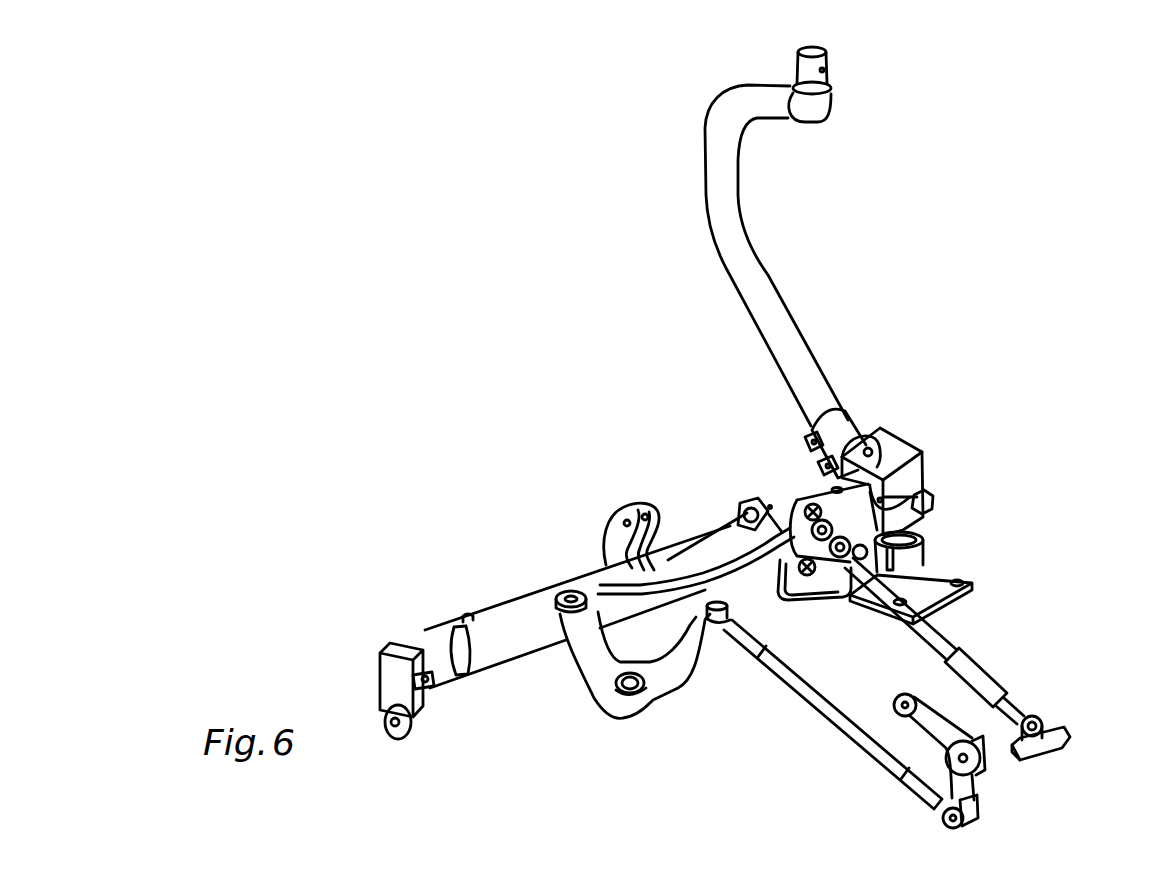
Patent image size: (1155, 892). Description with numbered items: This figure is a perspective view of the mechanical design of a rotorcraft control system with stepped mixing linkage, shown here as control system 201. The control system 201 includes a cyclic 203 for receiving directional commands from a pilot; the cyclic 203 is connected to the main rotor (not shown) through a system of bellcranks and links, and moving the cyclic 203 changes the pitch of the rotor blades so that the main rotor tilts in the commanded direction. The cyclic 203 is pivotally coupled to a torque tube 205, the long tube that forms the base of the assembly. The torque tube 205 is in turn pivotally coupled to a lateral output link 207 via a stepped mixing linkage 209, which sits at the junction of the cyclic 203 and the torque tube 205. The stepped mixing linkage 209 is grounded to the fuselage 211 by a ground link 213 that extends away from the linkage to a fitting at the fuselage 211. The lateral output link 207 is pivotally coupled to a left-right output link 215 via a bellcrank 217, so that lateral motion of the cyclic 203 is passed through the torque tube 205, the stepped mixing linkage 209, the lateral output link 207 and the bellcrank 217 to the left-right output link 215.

The control system 201 is at (975, 386).
The cyclic 203 is at (778, 285).
The torque tube 205 is at (528, 597).
The lateral output link 207 is at (685, 578).
The stepped mixing linkage 209 is at (805, 603).
The fuselage 211 is at (1070, 733).
The ground link 213 is at (950, 647).
The left-right output link 215 is at (822, 714).
The bellcrank 217 is at (671, 690).